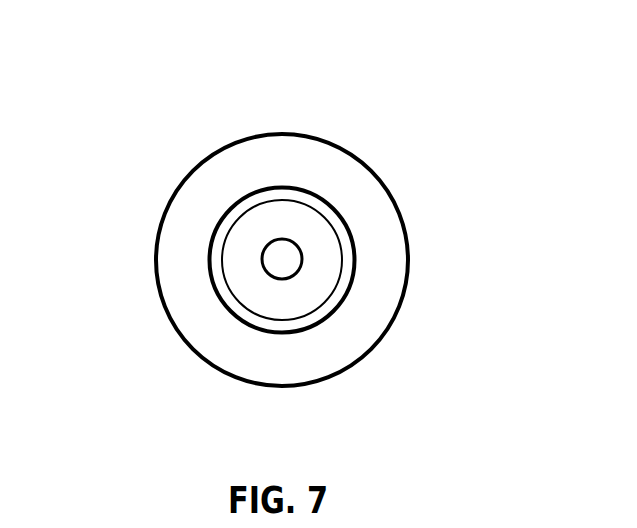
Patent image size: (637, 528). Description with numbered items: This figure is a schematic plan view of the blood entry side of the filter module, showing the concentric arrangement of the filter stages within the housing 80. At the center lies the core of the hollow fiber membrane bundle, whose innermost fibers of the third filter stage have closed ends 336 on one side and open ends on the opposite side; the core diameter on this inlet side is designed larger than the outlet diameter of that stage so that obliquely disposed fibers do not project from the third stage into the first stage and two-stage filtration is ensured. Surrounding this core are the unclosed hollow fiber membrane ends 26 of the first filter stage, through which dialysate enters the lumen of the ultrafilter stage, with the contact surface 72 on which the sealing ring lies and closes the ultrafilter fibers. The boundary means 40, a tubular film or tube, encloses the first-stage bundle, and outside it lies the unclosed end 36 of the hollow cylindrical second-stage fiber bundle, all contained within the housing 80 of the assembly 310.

The cable assembly 310 is at (161, 110).
The unclosed hollow fiber membrane ends 26 is at (300, 218).
The closed ends 336 is at (300, 243).
The contact surface 72 is at (348, 258).
The boundary means 40 is at (343, 298).
The end of fiber bundle 36 is at (332, 355).
The housing 80 is at (198, 355).